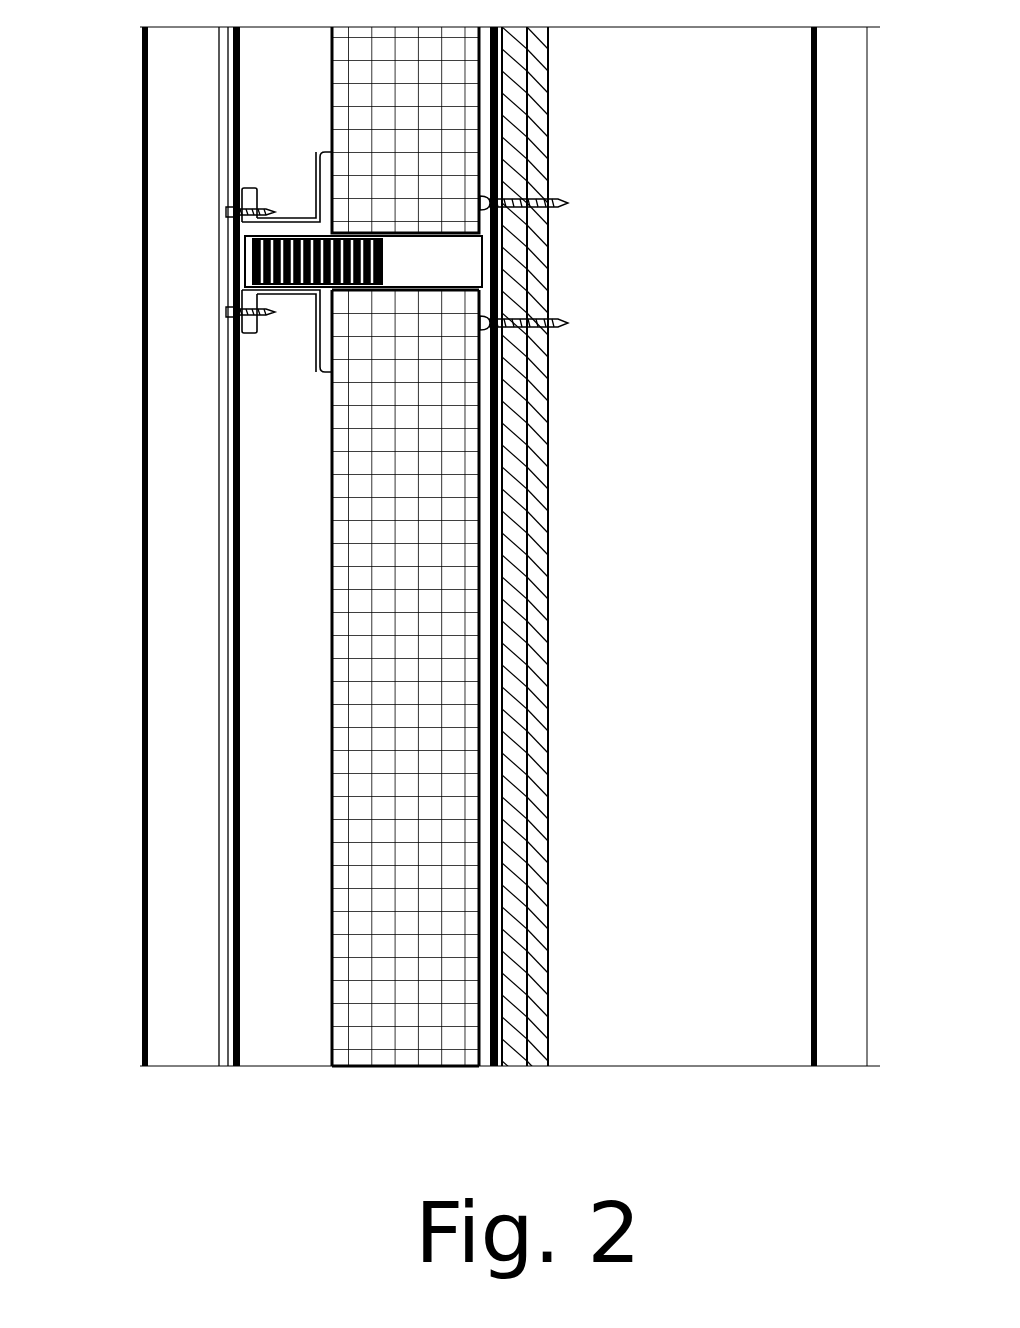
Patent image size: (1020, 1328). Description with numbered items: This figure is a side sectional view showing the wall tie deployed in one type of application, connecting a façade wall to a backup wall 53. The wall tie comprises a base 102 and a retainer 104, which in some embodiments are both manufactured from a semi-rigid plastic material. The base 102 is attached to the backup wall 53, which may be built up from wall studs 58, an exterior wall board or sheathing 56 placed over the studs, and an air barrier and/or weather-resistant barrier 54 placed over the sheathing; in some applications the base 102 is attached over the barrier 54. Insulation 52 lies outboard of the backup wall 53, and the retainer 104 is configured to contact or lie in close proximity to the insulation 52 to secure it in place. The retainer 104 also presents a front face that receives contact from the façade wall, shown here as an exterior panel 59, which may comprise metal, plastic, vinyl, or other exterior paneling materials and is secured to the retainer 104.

The insulation 52 is at (420, 730).
The backup wall 53 is at (493, 1128).
The air barrier and/or weather-resistant barrier 54 is at (497, 835).
The exterior wall board or sheathing 56 is at (528, 905).
The wall studs 58 is at (590, 1020).
The exterior panel 59 is at (140, 722).
The base 102 is at (485, 248).
The retainer 104 is at (318, 342).